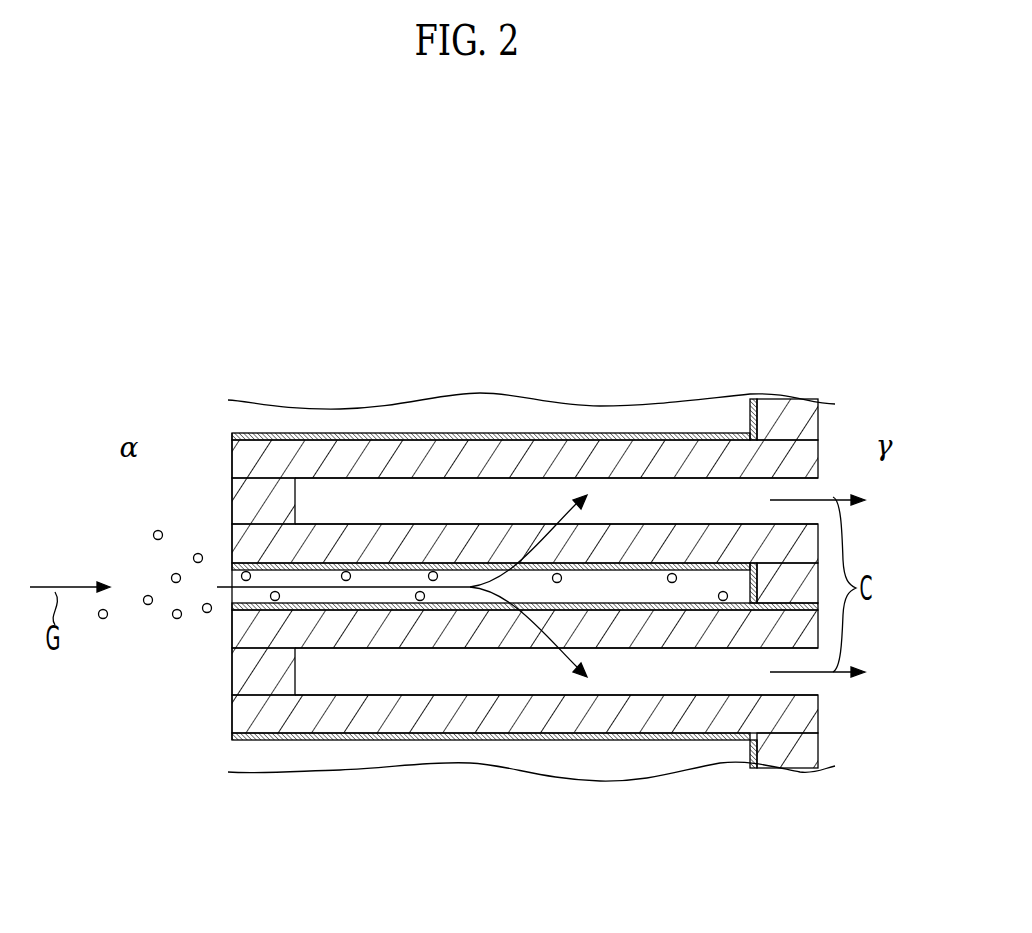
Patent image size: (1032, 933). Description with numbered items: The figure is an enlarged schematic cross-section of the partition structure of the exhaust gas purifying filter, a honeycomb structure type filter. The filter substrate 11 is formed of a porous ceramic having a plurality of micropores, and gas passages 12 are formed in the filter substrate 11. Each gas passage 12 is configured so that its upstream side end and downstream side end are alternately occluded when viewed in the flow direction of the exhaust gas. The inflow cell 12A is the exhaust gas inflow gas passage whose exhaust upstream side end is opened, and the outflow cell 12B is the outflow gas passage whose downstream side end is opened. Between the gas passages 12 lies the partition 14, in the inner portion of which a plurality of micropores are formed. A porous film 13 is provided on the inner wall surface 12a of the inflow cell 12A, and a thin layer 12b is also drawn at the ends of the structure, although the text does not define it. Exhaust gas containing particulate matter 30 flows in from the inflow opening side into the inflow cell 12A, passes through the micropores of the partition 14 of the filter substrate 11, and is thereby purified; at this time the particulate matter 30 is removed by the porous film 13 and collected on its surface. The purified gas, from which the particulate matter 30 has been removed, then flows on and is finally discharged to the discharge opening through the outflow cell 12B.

The filter substrate 11 is at (278, 465).
The gas passage 12 is at (397, 575).
The inflow cell 12A is at (622, 592).
The outflow cell 12B is at (550, 495).
The inner wall surface 12a is at (512, 438).
The vertical end thin layer 12b is at (752, 480).
The porous film 13 is at (363, 438).
The partition 14 is at (713, 457).
The particulate matter 30 is at (153, 535).